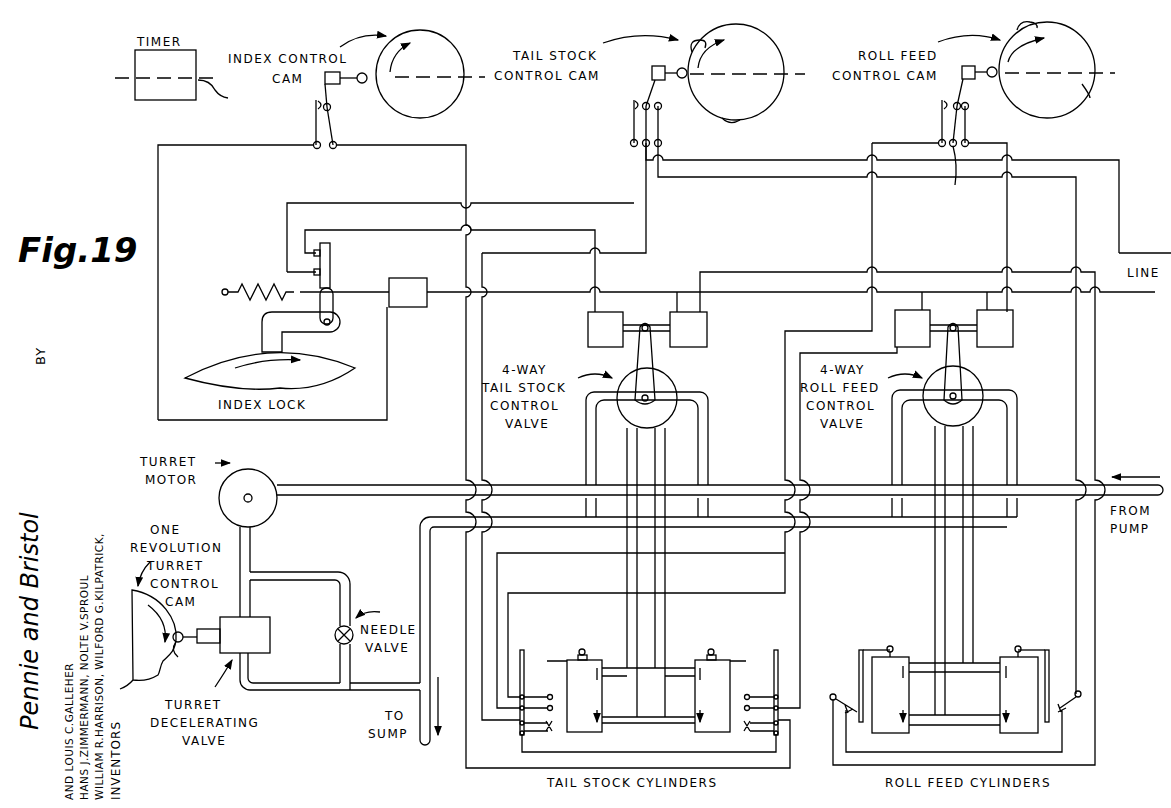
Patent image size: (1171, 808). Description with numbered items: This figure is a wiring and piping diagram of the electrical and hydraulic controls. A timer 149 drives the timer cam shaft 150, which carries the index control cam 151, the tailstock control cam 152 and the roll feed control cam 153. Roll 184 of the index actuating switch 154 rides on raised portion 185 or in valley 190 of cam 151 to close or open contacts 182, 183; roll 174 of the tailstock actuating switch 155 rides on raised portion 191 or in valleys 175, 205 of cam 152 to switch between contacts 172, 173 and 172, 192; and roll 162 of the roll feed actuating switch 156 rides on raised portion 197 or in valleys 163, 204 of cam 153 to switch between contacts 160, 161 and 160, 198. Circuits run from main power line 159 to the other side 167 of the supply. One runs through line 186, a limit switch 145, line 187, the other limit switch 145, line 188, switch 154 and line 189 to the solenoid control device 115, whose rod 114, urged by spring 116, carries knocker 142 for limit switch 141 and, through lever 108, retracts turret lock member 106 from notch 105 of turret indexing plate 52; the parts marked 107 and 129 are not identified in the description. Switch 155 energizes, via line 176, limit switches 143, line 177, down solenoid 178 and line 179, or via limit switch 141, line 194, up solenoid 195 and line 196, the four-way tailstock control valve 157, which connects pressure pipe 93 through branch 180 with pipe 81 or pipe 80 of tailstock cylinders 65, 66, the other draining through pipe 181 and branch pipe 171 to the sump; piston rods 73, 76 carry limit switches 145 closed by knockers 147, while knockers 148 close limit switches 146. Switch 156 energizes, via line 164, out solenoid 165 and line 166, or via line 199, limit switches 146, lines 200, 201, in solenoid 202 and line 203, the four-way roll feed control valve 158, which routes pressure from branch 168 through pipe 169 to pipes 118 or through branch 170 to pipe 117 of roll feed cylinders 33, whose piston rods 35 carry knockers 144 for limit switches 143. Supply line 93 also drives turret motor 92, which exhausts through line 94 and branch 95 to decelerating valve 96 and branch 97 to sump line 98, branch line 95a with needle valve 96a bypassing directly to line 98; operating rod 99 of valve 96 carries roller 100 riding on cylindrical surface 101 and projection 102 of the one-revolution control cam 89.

The timer 149 is at (163, 100).
The timer cam shaft 150 is at (227, 92).
The index control cam 151 is at (446, 93).
The valley of cam 151 190 is at (424, 116).
The roll 184 is at (357, 83).
The raised portion of cam 151 185 is at (366, 92).
The contact 183 is at (334, 122).
The contact 182 is at (316, 124).
The index actuating switch 154 is at (322, 152).
The line 189 is at (160, 196).
The tailstock control cam 152 is at (770, 98).
The valley of cam 152 205 is at (692, 40).
The raised portion of cam 152 191 is at (735, 122).
The roll 174 is at (677, 68).
The valley of cam 152 175 is at (700, 104).
The contact 172 is at (640, 138).
The contact 192 is at (630, 114).
The tailstock actuating switch 155 is at (632, 150).
The contact 173 is at (662, 144).
The up solenoid 195 is at (388, 203).
The line 176 is at (746, 180).
The line 164 is at (1008, 228).
The main power line 159 is at (1128, 254).
The roll feed control cam 153 is at (1072, 104).
The valley of cam 153 204 is at (1020, 26).
The raised portion of cam 153 197 is at (1093, 95).
The valley of cam 153 163 is at (1046, 118).
The roll 162 is at (990, 67).
The contact 161 is at (970, 128).
The contact 198 is at (941, 104).
The roll feed actuating switch 156 is at (940, 117).
The contact 160 is at (954, 155).
The line 199 is at (785, 355).
The line 177 is at (1097, 634).
The other side of main power supply 167 is at (1142, 295).
The line 186 is at (484, 323).
The line 194 is at (414, 231).
The limit switch 141 is at (286, 258).
The knocker 142 is at (330, 270).
The rod 114 is at (362, 296).
The solenoid control device 115 is at (413, 308).
The spring 116 is at (242, 291).
The lever 108 is at (268, 319).
The turret lock member 106 is at (262, 346).
The notch 105 is at (300, 350).
The turret indexing plate 52 is at (334, 377).
The index plate edge 107 is at (212, 370).
The line 196 is at (620, 305).
The down solenoid 178 is at (707, 330).
The line 179 is at (676, 305).
The four-way tailstock control valve 157 is at (673, 378).
The pipe 181 is at (588, 450).
The branch 180 is at (708, 441).
The pipe 80 is at (628, 630).
The pipe 81 is at (664, 637).
The line 200 is at (566, 594).
The line 201 is at (803, 571).
The in solenoid 202 is at (896, 335).
The tailstock cylinder 65 is at (584, 696).
The tailstock cylinder 66 is at (715, 696).
The piston rod 73 is at (584, 649).
The piston rod 76 is at (711, 649).
The knocker 148 is at (553, 660).
The limit switch 146 is at (538, 694).
The knocker 147 is at (555, 734).
The limit switch 145 is at (518, 736).
The line 187 is at (628, 755).
The line 203 is at (922, 300).
The line 166 is at (987, 300).
The out solenoid 165 is at (1013, 330).
The four-way roll feed control valve 158 is at (982, 378).
The branch pipe 171 is at (893, 450).
The branch 168 is at (1018, 456).
The branch 170 is at (935, 555).
The pipe 169 is at (973, 545).
The roll feed cylinder 33 is at (955, 695).
The piston rod 35 is at (890, 646).
The pipe 118 is at (955, 674).
The hydraulic pipe 117 is at (956, 727).
The knocker 144 is at (857, 705).
The limit switch 143 is at (838, 690).
The fluid motor 92 is at (268, 483).
The hydraulic supply line 93 is at (373, 497).
The line 94 is at (251, 549).
The branch line 95a is at (350, 580).
The branch 95 is at (251, 602).
The needle valve 96a is at (338, 643).
The decelerating valve 96 is at (245, 635).
The branch 97 is at (280, 691).
The line 98 is at (376, 698).
The line 188 is at (460, 758).
The control cam 89 is at (154, 635).
The operating rod 99 is at (210, 629).
The roller 100 is at (184, 644).
The projection 102 is at (180, 660).
The cam lobe 129 is at (168, 668).
The cam surface 101 is at (141, 690).